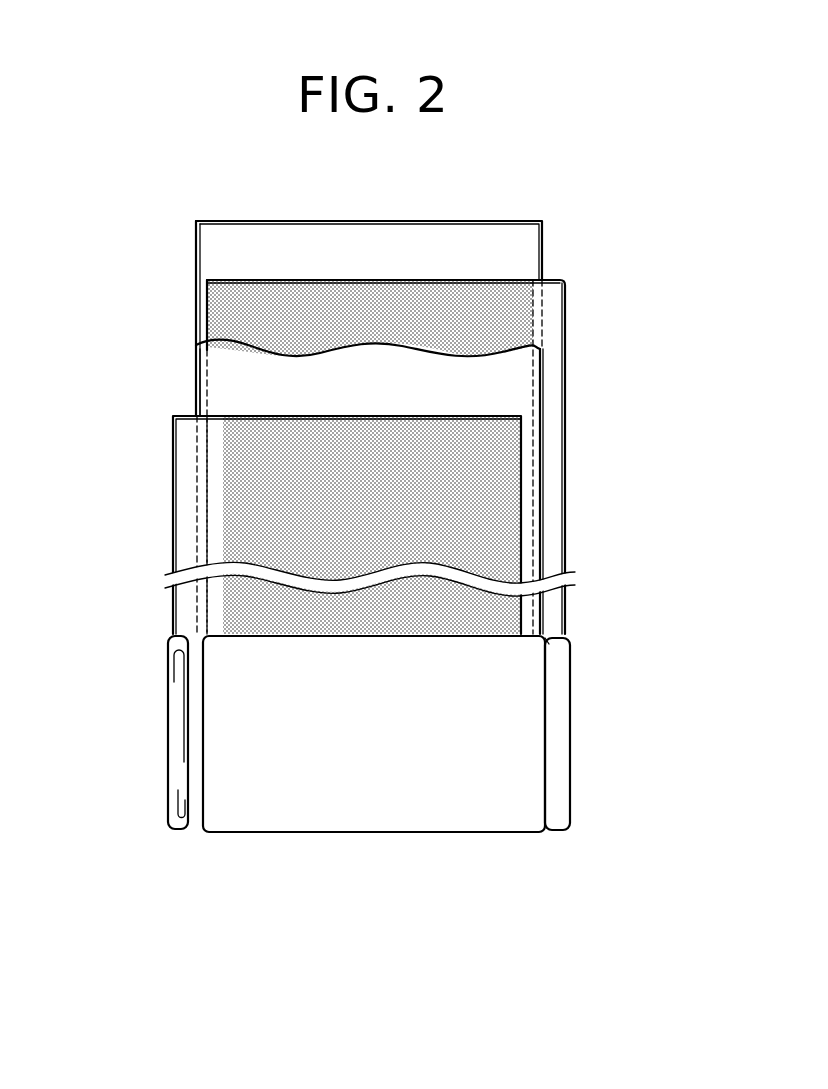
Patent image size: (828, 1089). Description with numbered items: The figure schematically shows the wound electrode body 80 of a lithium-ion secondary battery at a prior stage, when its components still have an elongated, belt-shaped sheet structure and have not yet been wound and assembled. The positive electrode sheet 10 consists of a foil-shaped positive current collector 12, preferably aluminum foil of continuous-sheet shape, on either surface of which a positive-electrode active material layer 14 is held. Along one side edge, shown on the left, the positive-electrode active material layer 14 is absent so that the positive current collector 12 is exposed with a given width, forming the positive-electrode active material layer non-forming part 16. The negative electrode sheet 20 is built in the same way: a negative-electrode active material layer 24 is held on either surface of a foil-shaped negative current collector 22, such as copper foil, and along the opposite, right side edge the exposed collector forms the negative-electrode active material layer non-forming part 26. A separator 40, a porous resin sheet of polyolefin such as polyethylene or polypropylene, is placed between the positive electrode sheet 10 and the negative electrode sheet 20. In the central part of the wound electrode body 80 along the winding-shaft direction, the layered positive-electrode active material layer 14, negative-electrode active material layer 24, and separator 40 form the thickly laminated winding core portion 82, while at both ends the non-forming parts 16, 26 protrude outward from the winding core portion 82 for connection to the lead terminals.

The positive electrode sheet 10 is at (294, 525).
The positive current collector 12 is at (172, 558).
The positive-electrode active material layer 14 is at (237, 436).
The positive-electrode active material layer non-forming part 16 is at (188, 532).
The negative electrode sheet 20 is at (438, 457).
The negative current collector 22 is at (566, 465).
The negative-electrode active material layer 24 is at (527, 303).
The negative-electrode active material layer non-forming part 26 is at (548, 420).
The separator 40 is at (218, 243).
The wound electrode body 80 is at (369, 772).
The winding core portion 82 is at (276, 818).